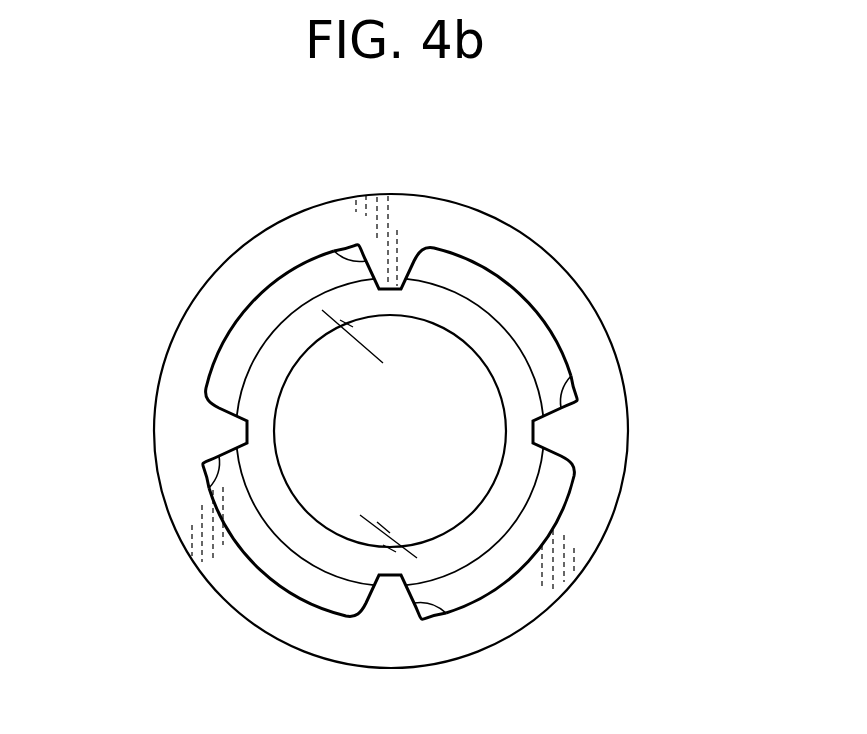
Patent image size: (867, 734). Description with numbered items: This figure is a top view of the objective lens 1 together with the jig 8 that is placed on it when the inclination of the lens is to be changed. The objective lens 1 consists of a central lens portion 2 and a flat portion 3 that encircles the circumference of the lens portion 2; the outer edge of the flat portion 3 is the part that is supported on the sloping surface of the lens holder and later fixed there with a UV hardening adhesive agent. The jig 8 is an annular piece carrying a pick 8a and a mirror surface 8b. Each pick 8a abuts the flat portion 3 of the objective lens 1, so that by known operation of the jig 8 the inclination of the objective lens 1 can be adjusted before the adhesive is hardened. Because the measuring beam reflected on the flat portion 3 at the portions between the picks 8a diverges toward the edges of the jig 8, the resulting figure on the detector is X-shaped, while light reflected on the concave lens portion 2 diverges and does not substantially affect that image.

The objective lens 1 is at (256, 384).
The lens portion 2 is at (327, 490).
The flat portion 3 is at (518, 502).
The jig 8 is at (560, 272).
The pick 8a is at (358, 263).
The mirror surface 8b is at (477, 238).